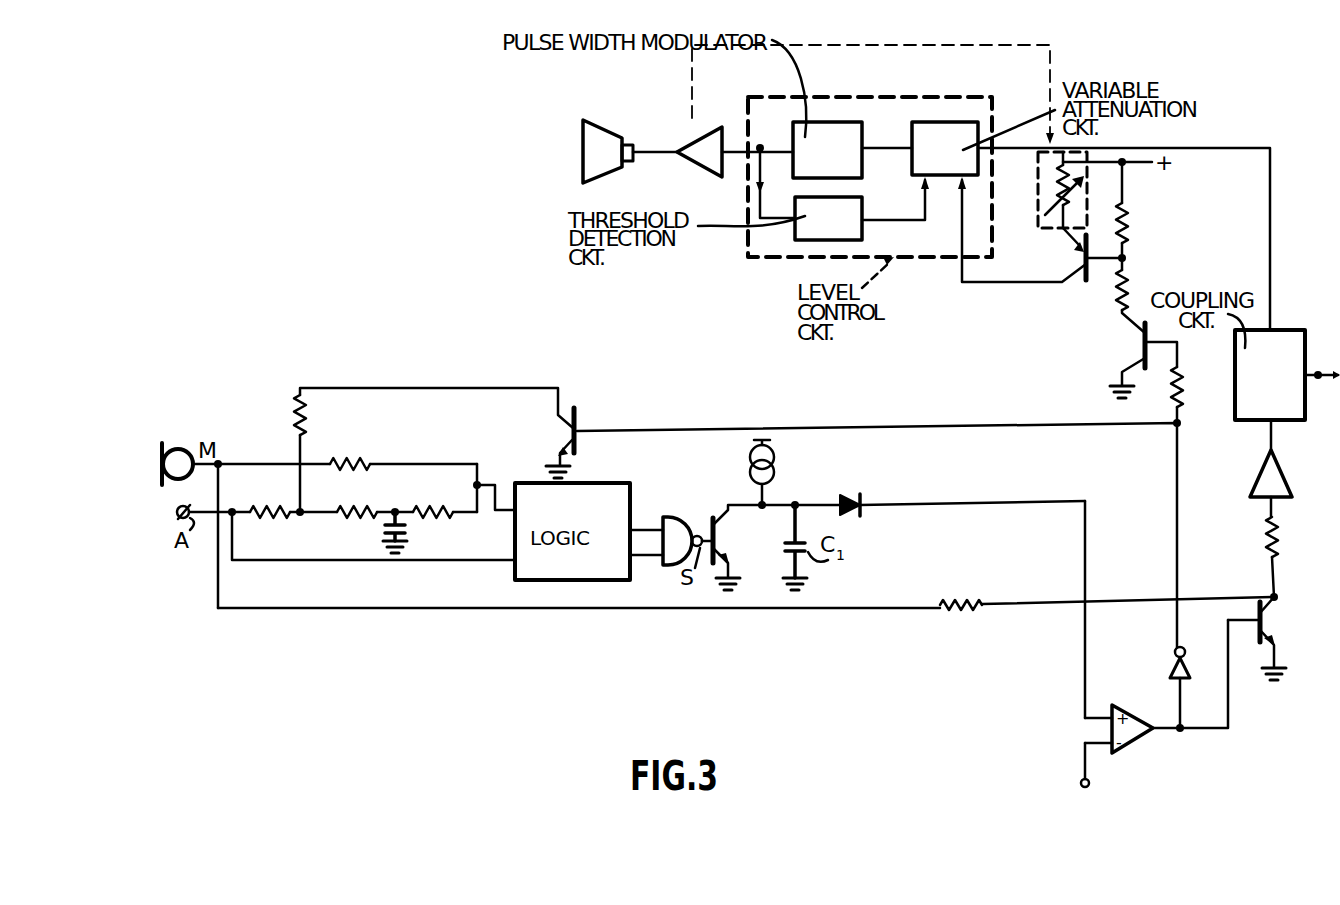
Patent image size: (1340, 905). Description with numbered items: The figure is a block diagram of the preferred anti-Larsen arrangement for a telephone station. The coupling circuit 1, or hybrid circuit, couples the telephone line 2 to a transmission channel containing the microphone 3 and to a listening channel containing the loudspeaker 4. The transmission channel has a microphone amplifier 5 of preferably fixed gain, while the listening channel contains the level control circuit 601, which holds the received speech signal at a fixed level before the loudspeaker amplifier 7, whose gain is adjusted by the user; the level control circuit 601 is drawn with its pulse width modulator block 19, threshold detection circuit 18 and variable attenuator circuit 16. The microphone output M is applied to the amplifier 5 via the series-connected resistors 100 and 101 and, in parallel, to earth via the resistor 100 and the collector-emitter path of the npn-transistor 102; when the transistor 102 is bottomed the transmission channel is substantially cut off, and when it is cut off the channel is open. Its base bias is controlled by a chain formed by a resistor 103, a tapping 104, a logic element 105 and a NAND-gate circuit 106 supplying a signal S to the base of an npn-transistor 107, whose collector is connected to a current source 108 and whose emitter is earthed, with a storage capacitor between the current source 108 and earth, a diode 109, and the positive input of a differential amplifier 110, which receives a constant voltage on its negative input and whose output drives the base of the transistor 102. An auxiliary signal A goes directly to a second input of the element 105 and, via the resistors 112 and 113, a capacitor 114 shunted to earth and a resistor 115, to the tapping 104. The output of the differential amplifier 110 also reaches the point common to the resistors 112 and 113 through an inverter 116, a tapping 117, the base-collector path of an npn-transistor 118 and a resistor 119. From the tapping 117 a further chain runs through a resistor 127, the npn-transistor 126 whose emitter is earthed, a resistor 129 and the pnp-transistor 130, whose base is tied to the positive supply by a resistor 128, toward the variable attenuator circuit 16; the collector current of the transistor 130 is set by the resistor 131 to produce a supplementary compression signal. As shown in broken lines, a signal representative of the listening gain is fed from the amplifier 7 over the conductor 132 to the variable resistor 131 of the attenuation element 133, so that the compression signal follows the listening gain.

The coupling circuit 1 is at (1278, 348).
The telephone line 2 is at (1336, 380).
The microphone 3 is at (170, 461).
The loudspeaker 4 is at (606, 164).
The microphone amplifier 5 is at (1280, 485).
The loudspeaker amplifier 7 is at (708, 165).
The variable attenuator circuit 16 is at (945, 140).
The threshold detection circuit 18 is at (795, 232).
The pulse width modulator block 19 is at (812, 135).
The resistor 100 is at (975, 598).
The resistor 101 is at (1268, 538).
The npn-transistor 102 is at (1268, 626).
The resistor 103 is at (358, 462).
The tapping 104 is at (479, 486).
The logic element 105 is at (616, 502).
The NAND-gate circuit 106 is at (681, 518).
The npn-transistor 107 is at (722, 544).
The current source 108 is at (774, 470).
The diode 109 is at (853, 495).
The differential amplifier 110 is at (1130, 742).
The resistor 112 is at (268, 518).
The resistor 113 is at (338, 518).
The capacitor 114 is at (406, 536).
The resistor 115 is at (455, 518).
The inverter 116 is at (1170, 672).
The tapping 117 is at (1180, 426).
The npn-transistor 118 is at (570, 433).
The resistor 119 is at (305, 420).
The npn-transistor 126 is at (1142, 345).
The resistor 127 is at (1185, 385).
The resistor 128 is at (1126, 218).
The resistor 129 is at (1126, 284).
The pnp-transistor 130 is at (1080, 280).
The resistor 131 is at (1042, 180).
The conductor 132 is at (692, 80).
The variable attenuation circuit 133 is at (1041, 232).
The level control circuit 601 is at (786, 130).